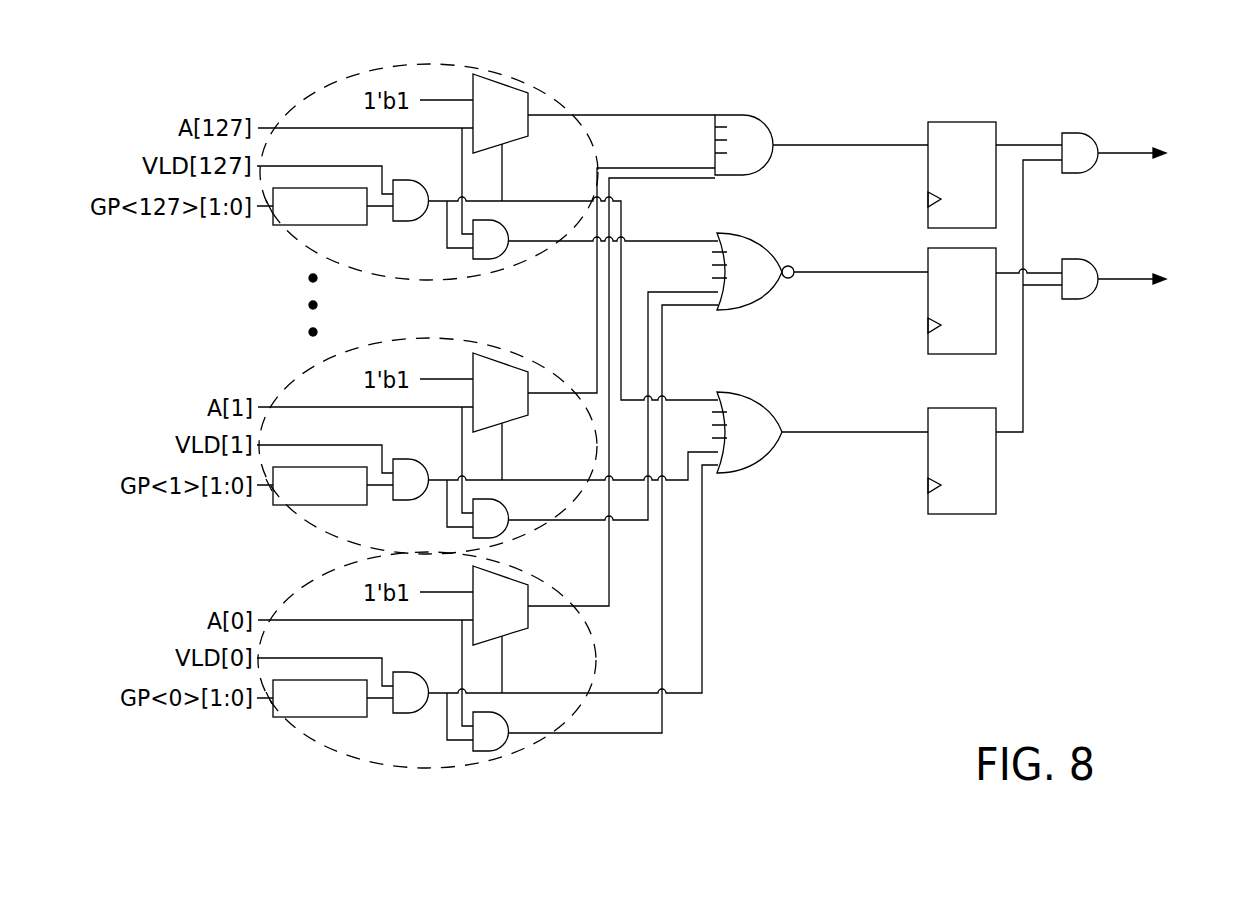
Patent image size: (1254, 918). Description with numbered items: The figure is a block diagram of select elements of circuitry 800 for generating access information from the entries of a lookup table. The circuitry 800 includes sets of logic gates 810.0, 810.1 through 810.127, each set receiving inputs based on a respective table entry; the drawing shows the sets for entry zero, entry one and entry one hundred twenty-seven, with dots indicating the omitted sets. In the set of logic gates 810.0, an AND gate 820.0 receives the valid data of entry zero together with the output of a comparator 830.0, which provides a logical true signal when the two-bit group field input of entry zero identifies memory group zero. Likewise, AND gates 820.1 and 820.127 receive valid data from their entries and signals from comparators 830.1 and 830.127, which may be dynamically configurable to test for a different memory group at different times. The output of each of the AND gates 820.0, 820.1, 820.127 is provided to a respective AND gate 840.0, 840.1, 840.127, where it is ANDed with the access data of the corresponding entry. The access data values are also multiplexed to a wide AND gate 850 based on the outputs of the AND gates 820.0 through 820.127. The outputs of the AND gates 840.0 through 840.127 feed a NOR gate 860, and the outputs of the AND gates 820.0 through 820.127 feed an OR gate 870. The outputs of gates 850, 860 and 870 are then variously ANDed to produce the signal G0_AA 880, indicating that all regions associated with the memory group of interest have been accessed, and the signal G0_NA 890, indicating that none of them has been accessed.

The circuitry 800 is at (886, 634).
The set of logic gates 810.127 is at (504, 62).
The AND gate 820.127 is at (427, 214).
The comparator 830.127 is at (300, 229).
The AND gate 840.127 is at (590, 305).
The set of logic gates 810.1 is at (515, 340).
The AND gate 820.1 is at (427, 497).
The comparator 830.1 is at (300, 508).
The AND gate 840.1 is at (582, 566).
The set of logic gates 810.0 is at (448, 779).
The AND gate 820.0 is at (427, 710).
The comparator 830.0 is at (300, 720).
The AND gate 840.0 is at (575, 784).
The AND gate 850 is at (826, 129).
The NOR gate 860 is at (829, 242).
The OR gate 870 is at (823, 402).
The G0_AA signal 880 is at (1226, 137).
The G0_NA signal 890 is at (1228, 266).